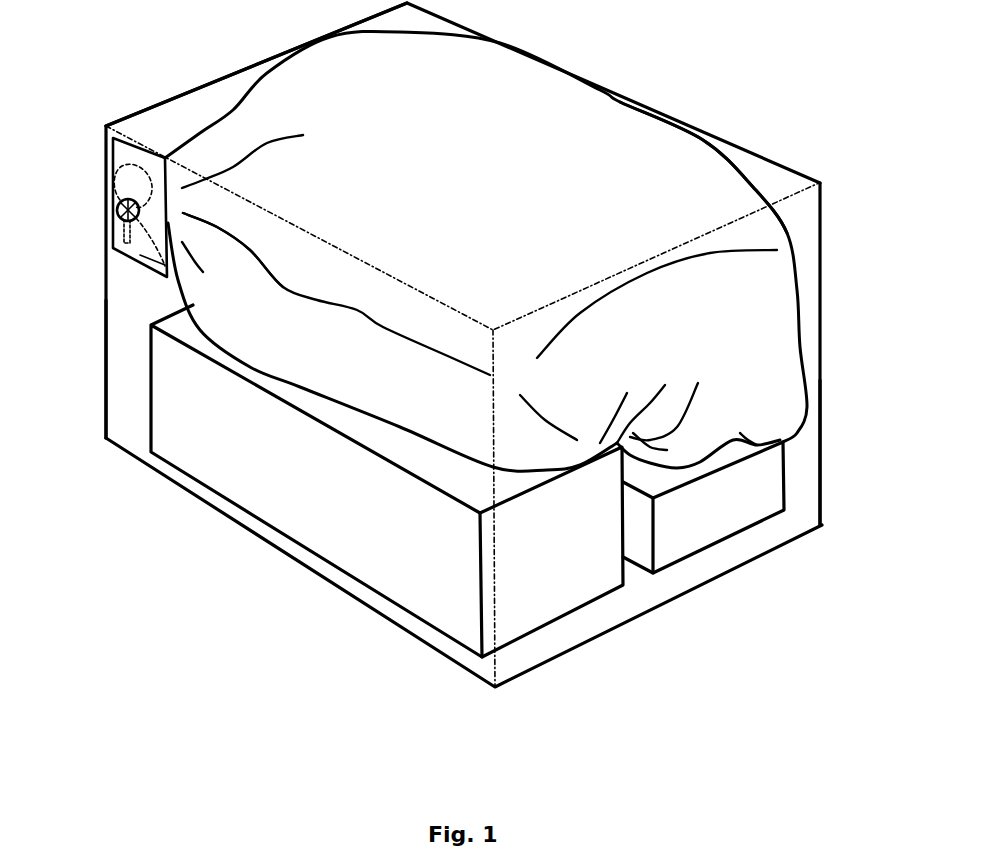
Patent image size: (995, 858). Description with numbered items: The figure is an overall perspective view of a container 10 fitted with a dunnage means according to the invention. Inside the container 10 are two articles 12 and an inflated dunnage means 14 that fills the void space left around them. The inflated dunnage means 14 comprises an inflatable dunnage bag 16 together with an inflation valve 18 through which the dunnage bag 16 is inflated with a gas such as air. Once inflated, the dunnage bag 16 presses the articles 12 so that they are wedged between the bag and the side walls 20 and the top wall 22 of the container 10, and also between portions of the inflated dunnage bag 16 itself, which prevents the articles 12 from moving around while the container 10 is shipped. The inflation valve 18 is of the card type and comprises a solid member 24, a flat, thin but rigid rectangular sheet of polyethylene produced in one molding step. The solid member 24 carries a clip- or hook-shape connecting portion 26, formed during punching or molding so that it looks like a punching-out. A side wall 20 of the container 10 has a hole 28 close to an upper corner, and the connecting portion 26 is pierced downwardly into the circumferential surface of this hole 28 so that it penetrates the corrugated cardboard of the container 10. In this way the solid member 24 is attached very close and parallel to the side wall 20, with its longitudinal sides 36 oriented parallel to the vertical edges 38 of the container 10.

The container 10 is at (822, 178).
The articles 12 is at (682, 550).
The inflated dunnage means 14 is at (573, 125).
The inflatable dunnage bag 16 is at (690, 168).
The inflation valve 18 is at (112, 192).
The side walls 20 is at (808, 458).
The top wall 22 is at (200, 110).
The card-type solid member 24 is at (147, 257).
The clip- or hook-shape connecting portion 26 is at (112, 240).
The hole 28 is at (118, 212).
The longitudinal sides 36 is at (198, 250).
The vertical edges 38 is at (103, 153).